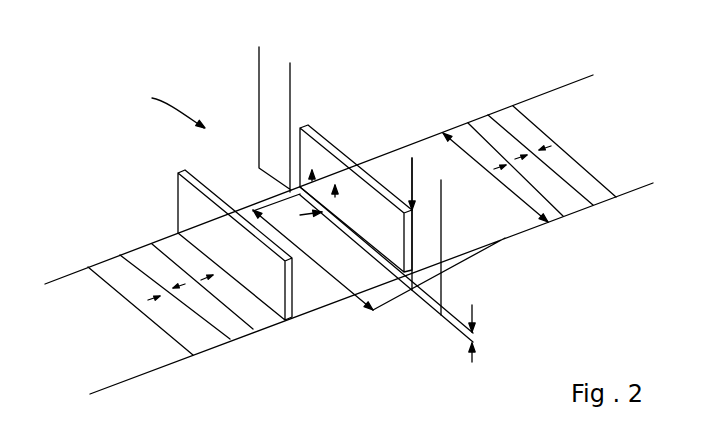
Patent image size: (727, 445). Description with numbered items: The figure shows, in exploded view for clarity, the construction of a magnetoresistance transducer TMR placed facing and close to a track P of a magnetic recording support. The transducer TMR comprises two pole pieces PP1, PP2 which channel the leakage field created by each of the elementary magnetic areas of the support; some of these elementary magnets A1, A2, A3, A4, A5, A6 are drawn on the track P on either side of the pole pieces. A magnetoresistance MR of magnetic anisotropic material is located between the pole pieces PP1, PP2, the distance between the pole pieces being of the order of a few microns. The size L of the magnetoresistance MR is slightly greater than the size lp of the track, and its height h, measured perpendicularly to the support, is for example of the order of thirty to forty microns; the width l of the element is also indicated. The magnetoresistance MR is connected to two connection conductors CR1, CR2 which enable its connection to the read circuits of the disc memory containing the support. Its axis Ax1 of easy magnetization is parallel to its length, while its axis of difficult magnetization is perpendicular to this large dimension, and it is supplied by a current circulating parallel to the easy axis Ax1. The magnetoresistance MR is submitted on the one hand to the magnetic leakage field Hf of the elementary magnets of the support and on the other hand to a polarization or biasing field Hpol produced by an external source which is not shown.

The track P is at (349, 221).
The elementary magnet A1 is at (200, 346).
The elementary magnet A2 is at (235, 334).
The elementary magnet A3 is at (267, 322).
The elementary magnet A4 is at (558, 224).
The elementary magnet A5 is at (581, 206).
The elementary magnet A6 is at (607, 200).
The pole piece PP1 is at (186, 212).
The pole piece PP2 is at (329, 151).
The connection conductor CR1 is at (268, 73).
The connection conductor CR2 is at (425, 222).
The size of the track lp is at (457, 199).
The magnetoresistance transducer TMR is at (178, 104).
The magnetic leakage field Hf is at (323, 183).
The polarization or biasing field Hpol is at (379, 187).
The magnetoresistance MR is at (340, 230).
The axis of easy magnetization Ax1 is at (313, 260).
The size of the magnetoresistance L is at (303, 264).
The width of magnetoresistive element l is at (381, 263).
The height of the magnetoresistance h is at (479, 333).